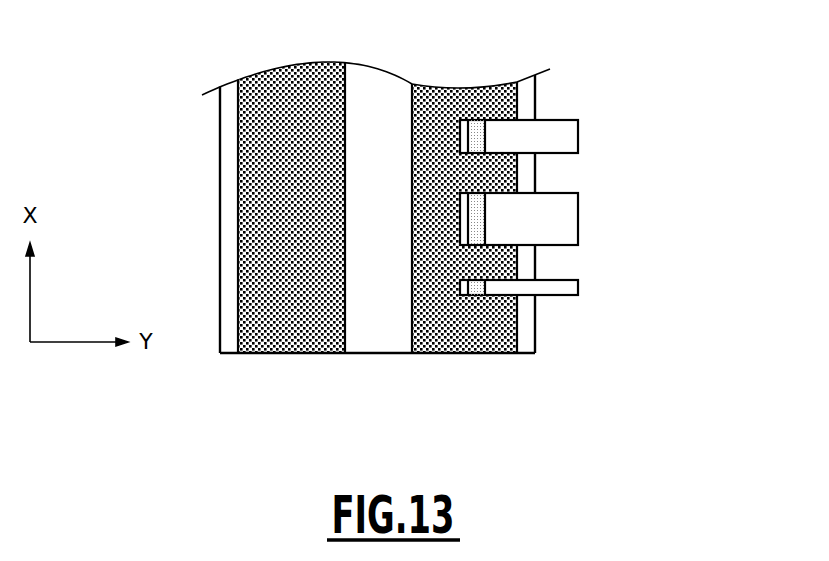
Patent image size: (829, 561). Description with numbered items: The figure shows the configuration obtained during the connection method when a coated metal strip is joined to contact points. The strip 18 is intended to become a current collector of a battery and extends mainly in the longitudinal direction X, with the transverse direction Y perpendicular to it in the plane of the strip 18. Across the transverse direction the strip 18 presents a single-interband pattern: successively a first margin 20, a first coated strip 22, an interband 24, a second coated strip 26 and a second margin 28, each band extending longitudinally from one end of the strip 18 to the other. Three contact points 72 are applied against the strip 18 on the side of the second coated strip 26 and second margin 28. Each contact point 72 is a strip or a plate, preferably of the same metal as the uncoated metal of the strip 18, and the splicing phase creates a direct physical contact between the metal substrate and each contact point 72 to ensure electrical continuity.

The strip 18 is at (499, 235).
The first margin 20 is at (228, 340).
The first coated strip 22 is at (290, 338).
The interband 24 is at (368, 335).
The second coated strip 26 is at (438, 112).
The second margin 28 is at (528, 102).
The contact point 72 is at (557, 290).